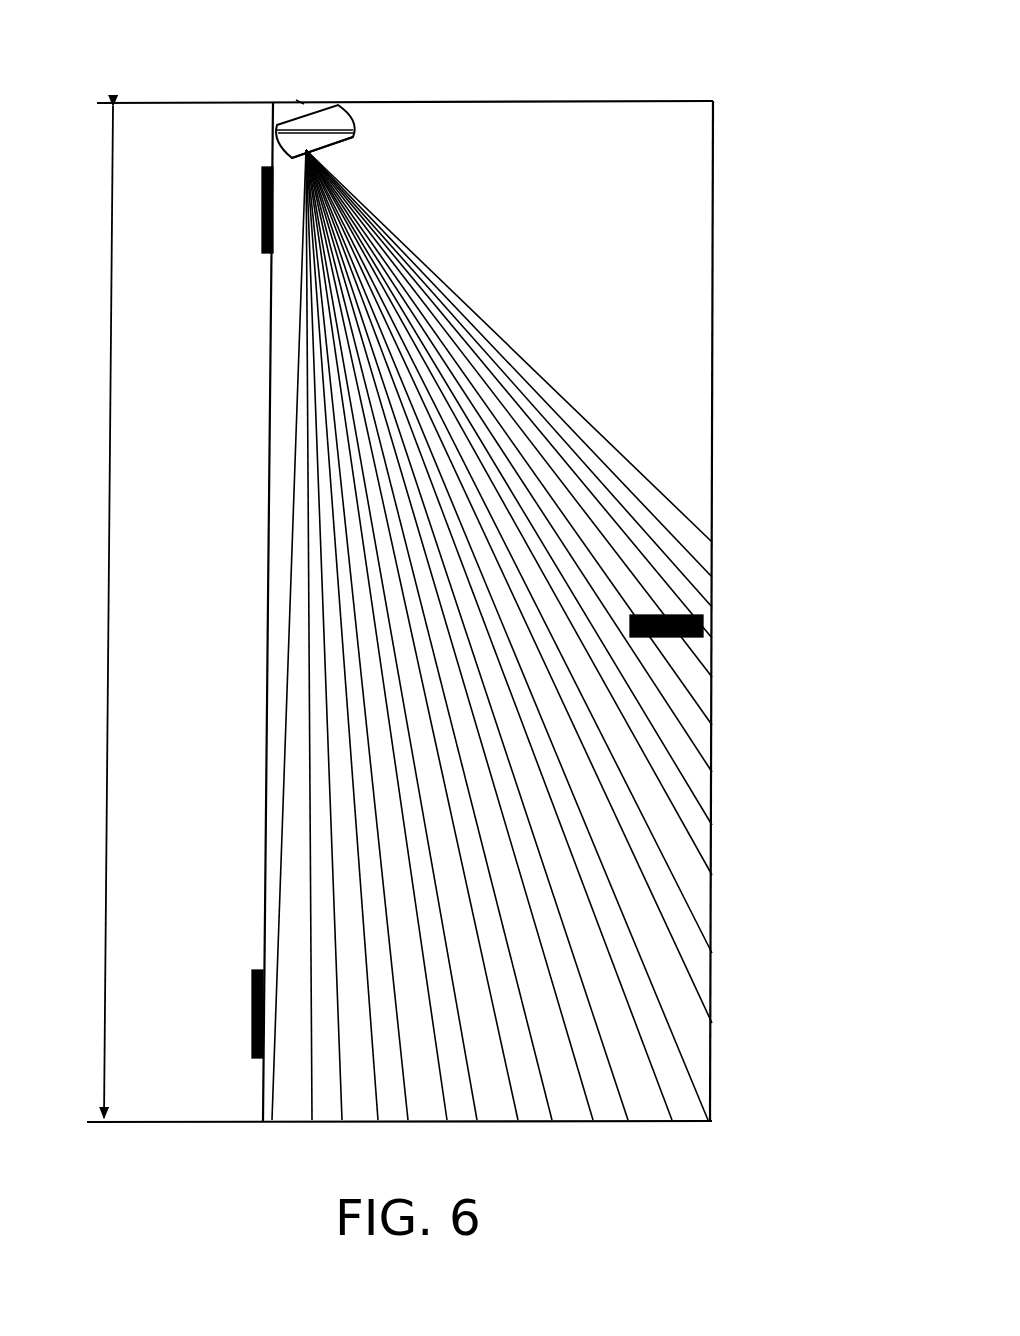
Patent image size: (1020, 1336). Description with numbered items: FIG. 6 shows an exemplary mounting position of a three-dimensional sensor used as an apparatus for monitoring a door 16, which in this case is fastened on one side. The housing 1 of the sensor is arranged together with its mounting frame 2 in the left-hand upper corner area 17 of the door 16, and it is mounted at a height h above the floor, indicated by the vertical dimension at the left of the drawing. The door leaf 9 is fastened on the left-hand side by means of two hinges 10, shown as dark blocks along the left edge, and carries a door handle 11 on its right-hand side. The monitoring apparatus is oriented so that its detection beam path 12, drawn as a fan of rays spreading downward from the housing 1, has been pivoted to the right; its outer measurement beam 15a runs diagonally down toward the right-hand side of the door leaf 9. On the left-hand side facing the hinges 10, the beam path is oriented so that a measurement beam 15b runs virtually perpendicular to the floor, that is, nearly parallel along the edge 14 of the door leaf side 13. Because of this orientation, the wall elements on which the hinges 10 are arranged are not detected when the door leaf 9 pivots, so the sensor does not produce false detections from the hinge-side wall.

The housing 1 is at (338, 120).
The mounting frame 2 is at (348, 138).
The door leaf 9 is at (628, 243).
The hinges 10 is at (262, 208).
The door handle 11 is at (672, 614).
The detection beam path 12 is at (590, 406).
The door leaf side 13 is at (265, 486).
The edge 14 is at (267, 598).
The outer measurement beam 15a is at (630, 465).
The measurement beam 15b is at (283, 660).
The door 16 is at (547, 124).
The left-hand upper corner area 17 is at (300, 99).
The height h is at (109, 612).